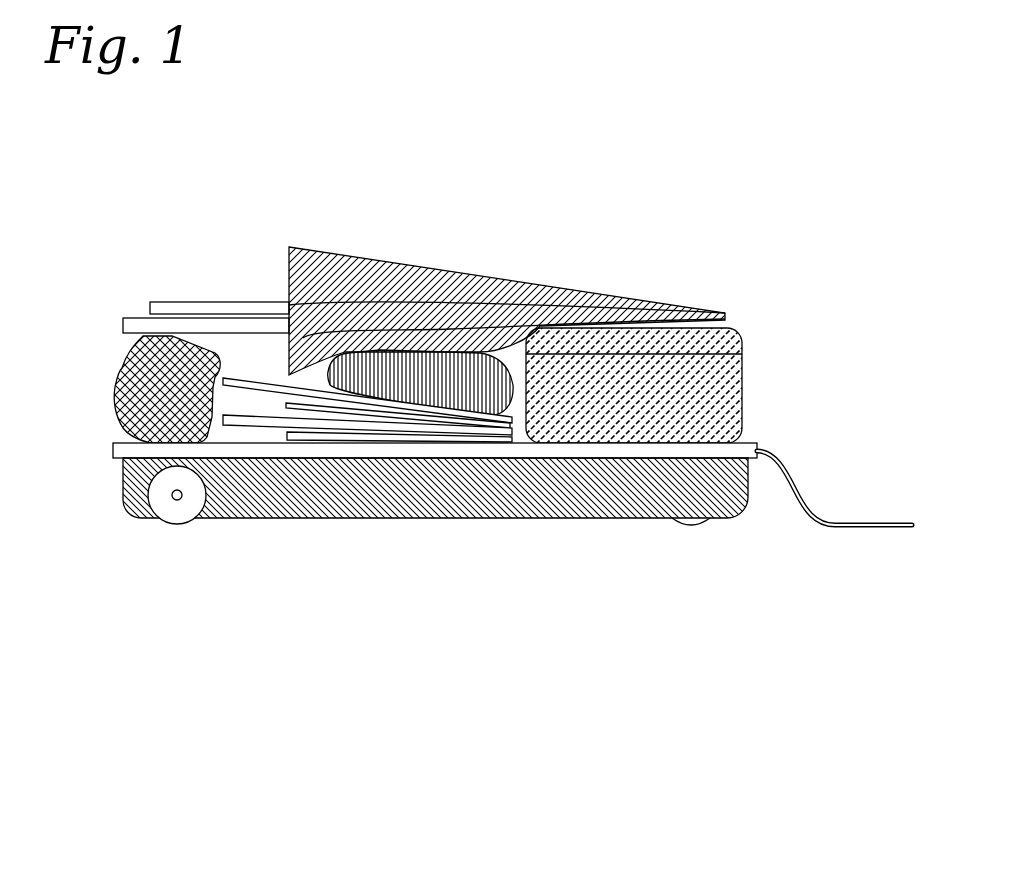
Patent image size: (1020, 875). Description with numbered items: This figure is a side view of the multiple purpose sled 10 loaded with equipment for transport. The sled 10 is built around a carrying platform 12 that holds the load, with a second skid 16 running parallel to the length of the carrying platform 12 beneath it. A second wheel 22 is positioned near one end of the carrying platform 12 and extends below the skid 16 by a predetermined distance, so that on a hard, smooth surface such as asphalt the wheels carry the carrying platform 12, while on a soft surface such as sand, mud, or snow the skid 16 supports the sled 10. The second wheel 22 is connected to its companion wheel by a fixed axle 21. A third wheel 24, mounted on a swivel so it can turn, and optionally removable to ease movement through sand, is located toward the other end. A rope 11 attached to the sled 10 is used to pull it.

The sled 10 is at (428, 548).
The rope 11 is at (815, 517).
The carrying platform 12 is at (118, 450).
The second skid 16 is at (506, 487).
The fixed axle 21 is at (175, 505).
The second wheel 22 is at (195, 512).
The third wheel 24 is at (690, 522).